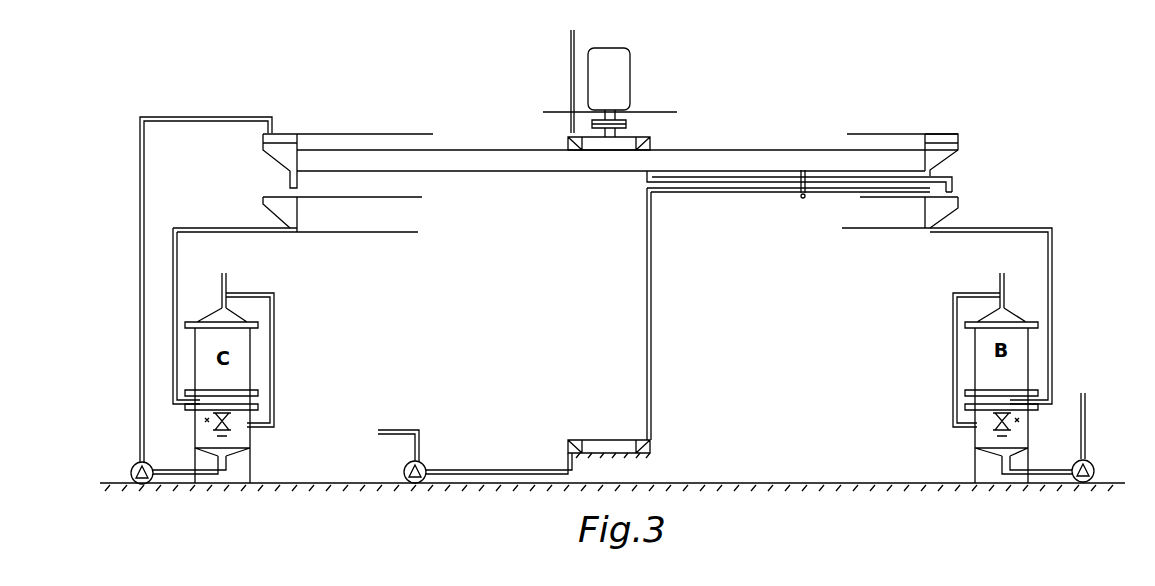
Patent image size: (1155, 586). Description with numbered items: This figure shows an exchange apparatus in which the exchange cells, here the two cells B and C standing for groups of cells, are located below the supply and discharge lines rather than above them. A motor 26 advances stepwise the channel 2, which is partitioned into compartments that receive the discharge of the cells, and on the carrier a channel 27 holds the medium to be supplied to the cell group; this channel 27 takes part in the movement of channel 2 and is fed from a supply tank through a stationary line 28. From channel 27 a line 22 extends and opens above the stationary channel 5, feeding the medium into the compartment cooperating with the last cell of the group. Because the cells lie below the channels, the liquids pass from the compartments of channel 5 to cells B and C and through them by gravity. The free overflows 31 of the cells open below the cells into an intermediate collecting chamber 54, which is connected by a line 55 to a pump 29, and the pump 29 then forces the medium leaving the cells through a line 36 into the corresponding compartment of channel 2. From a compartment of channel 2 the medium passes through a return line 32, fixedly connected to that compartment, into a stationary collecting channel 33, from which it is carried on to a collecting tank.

The channel 2 is at (263, 150).
The stationary channel 5 is at (263, 202).
The line 22 is at (767, 180).
The motor 26 is at (630, 84).
The channel 27 is at (652, 141).
The stationary line 28 is at (571, 67).
The pump 29 is at (131, 469).
The outlet line 31 is at (272, 358).
The return line 32 is at (742, 191).
The stationary collecting channel 33 is at (625, 452).
The line 36 is at (139, 220).
The intermediate collecting chamber 54 is at (247, 436).
The line 55 is at (165, 471).